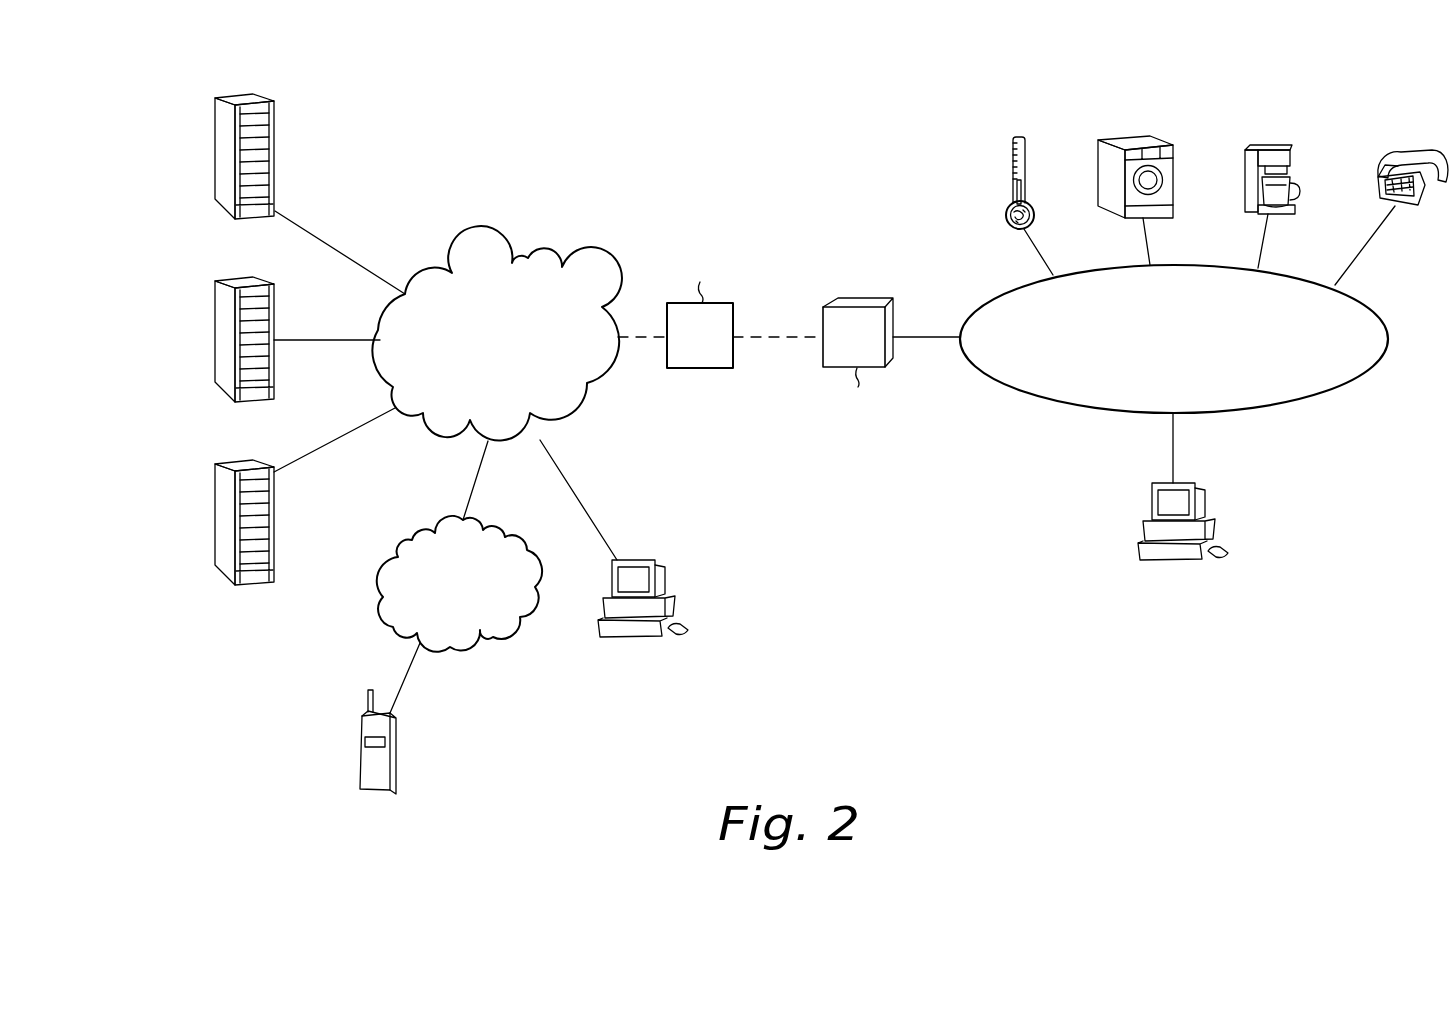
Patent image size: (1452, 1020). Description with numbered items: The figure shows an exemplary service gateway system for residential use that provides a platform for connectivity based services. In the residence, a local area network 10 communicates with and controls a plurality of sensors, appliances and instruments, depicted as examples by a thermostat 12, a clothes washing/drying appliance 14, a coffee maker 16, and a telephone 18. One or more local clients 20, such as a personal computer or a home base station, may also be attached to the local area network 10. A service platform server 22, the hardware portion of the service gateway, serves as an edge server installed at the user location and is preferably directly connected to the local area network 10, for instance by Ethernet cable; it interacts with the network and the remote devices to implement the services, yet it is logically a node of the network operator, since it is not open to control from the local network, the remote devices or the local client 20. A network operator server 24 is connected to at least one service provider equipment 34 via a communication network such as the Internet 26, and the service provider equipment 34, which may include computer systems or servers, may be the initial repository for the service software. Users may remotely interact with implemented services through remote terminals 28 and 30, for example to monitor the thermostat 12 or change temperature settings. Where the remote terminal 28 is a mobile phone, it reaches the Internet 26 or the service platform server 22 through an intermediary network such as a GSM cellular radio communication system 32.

The local area network 10 is at (1388, 341).
The thermostat 12 is at (1026, 164).
The clothes washing/drying appliance 14 is at (1174, 163).
The coffee maker 16 is at (1292, 159).
The telephone 18 is at (1427, 196).
The local client 20 is at (1205, 500).
The service platform server 22 is at (859, 298).
The network operator server 24 is at (696, 369).
The Internet 26 is at (484, 227).
The remote terminal 28 is at (396, 748).
The remote terminal 30 is at (665, 578).
The GSM cellular radio communication system 32 is at (503, 645).
The service provider equipment 34 is at (283, 149).